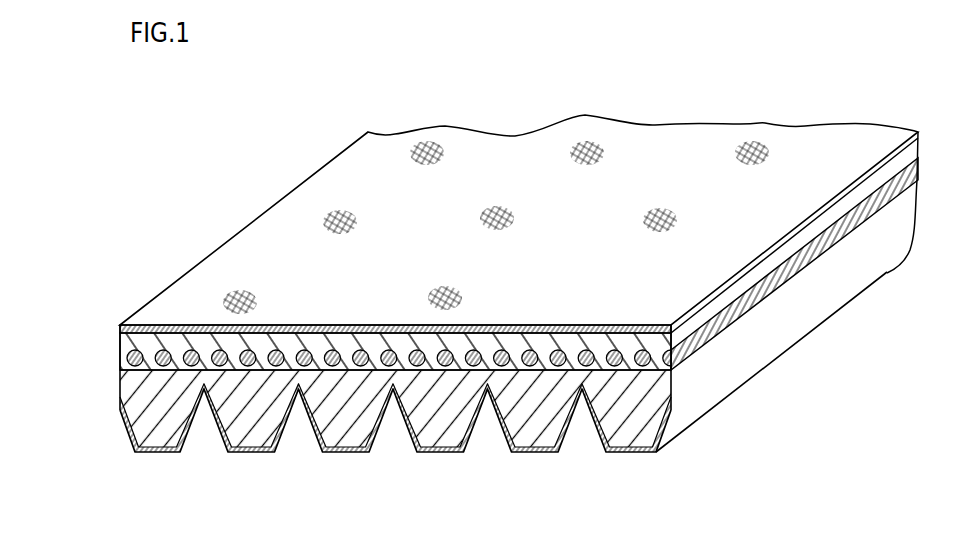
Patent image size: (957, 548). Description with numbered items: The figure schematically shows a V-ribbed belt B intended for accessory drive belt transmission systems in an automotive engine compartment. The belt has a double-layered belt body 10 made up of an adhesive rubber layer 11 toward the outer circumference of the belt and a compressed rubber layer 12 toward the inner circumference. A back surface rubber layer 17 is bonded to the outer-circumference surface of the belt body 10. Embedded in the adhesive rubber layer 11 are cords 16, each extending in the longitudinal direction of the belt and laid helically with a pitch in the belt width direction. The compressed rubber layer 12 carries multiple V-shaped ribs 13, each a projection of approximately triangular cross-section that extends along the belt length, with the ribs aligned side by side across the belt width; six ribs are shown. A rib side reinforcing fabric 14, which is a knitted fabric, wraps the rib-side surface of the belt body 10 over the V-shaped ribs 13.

The V-ribbed belt B is at (281, 126).
The belt body 10 is at (856, 338).
The adhesive rubber layer 11 is at (650, 342).
The compressed rubber layer 12 is at (650, 390).
The V-shaped rib 13 is at (160, 425).
The rib side reinforcing fabric 14 is at (175, 456).
The cord 16 is at (305, 350).
The back surface rubber layer 17 is at (153, 331).